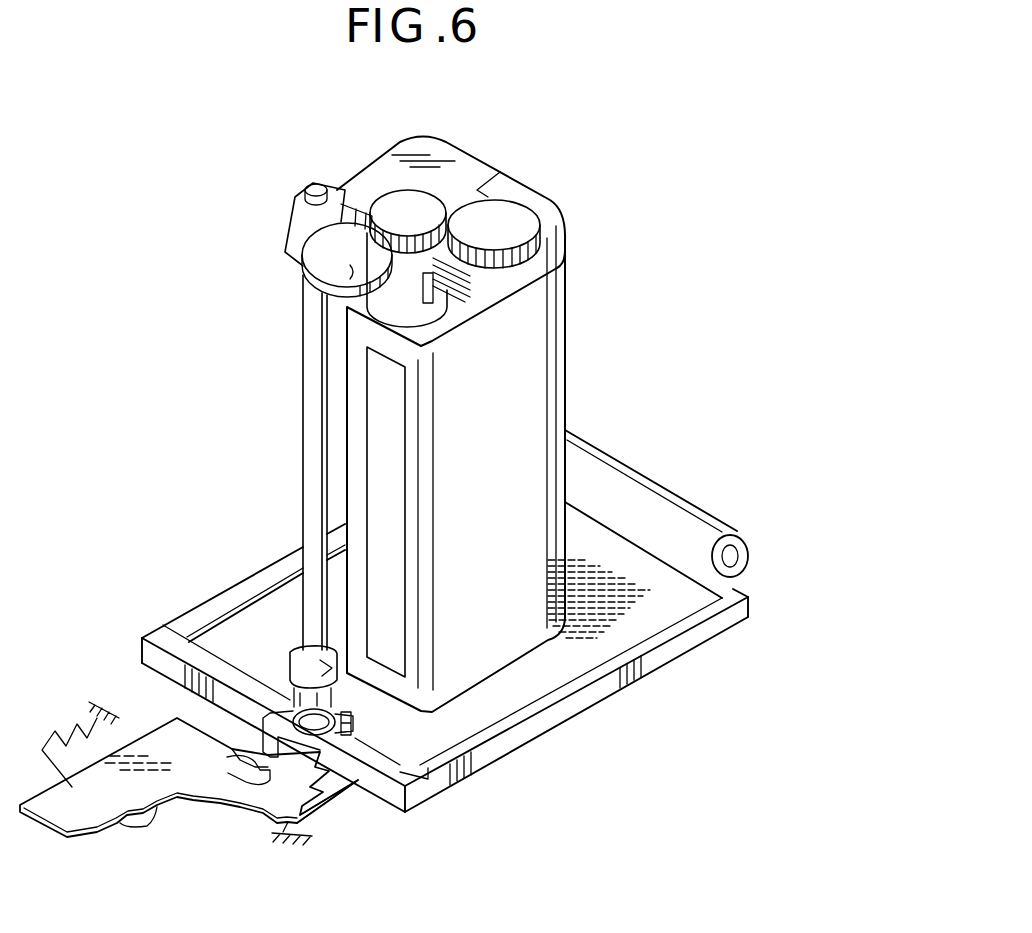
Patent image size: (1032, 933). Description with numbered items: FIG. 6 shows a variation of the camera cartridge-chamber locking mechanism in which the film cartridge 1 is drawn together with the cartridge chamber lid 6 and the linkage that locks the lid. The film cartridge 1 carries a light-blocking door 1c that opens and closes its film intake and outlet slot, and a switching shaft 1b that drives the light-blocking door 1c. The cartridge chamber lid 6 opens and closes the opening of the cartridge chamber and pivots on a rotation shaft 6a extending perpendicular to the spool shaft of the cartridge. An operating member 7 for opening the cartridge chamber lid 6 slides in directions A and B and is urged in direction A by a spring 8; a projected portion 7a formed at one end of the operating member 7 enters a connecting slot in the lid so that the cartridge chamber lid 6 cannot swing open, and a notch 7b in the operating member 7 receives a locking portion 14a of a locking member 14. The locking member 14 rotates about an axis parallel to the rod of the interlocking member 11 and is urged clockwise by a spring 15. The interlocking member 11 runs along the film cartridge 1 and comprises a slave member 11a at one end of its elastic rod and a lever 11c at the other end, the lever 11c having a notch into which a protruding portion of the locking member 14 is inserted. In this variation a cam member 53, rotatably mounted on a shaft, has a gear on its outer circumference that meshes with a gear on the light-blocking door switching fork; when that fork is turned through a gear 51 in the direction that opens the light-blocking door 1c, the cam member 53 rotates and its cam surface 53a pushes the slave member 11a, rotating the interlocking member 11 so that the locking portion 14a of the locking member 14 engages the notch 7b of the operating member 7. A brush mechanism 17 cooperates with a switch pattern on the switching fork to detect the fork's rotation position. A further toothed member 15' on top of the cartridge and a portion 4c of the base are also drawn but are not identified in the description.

The film cartridge 1 is at (540, 433).
The switching shaft 1b is at (413, 413).
The light-blocking door 1c is at (393, 503).
The notch in base rim 4c is at (360, 782).
The cartridge chamber lid 6 is at (597, 698).
The rotation shaft 6a is at (745, 560).
The operating member 7 is at (72, 820).
The projected portion 7a is at (358, 783).
The notch 7b is at (230, 748).
The spring 8 is at (77, 723).
The interlocking member 11 is at (313, 423).
The slave member 11a is at (293, 190).
The lever 11c is at (297, 657).
The locking member 14 is at (295, 712).
The locking portion 14a is at (253, 707).
The spring 15 is at (310, 858).
The gear knob 15' is at (433, 210).
The brush mechanism 17 is at (490, 297).
The gear 51 is at (523, 227).
The cam member 53 is at (345, 298).
The cam surface 53a is at (340, 296).